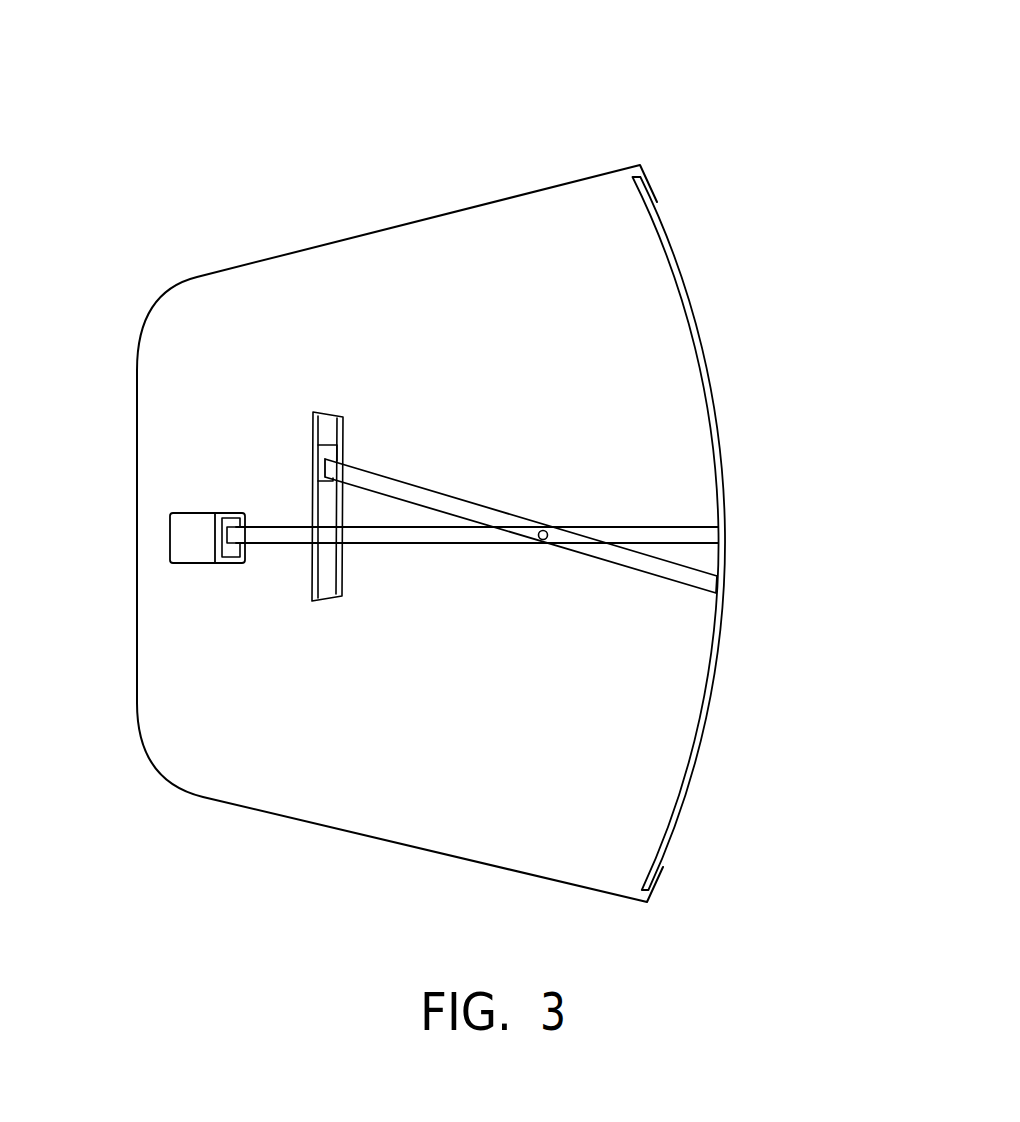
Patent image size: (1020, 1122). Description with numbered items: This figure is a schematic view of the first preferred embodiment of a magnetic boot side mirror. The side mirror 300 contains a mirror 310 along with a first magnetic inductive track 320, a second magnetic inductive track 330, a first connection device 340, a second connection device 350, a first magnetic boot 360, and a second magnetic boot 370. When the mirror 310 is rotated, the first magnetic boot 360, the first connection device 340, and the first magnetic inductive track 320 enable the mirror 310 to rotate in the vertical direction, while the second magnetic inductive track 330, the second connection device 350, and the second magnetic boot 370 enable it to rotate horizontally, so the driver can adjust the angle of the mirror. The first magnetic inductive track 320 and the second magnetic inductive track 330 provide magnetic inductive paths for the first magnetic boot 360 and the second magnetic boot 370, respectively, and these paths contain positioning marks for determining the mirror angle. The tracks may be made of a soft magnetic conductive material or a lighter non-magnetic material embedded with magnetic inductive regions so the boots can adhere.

The side mirror 300 is at (428, 218).
The mirror 310 is at (700, 348).
The first magnetic inductive track 320 is at (320, 600).
The second magnetic inductive track 330 is at (192, 565).
The first connection device 340 is at (442, 492).
The second connection device 350 is at (477, 545).
The first magnetic boot 360 is at (357, 463).
The second magnetic boot 370 is at (227, 540).